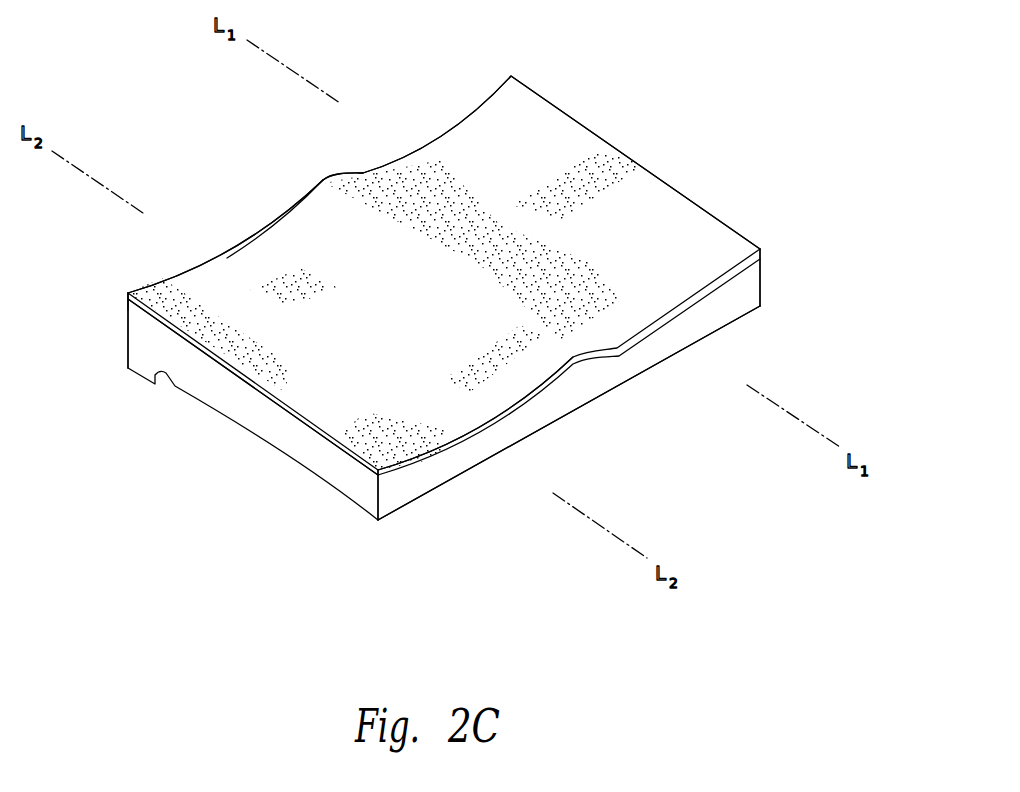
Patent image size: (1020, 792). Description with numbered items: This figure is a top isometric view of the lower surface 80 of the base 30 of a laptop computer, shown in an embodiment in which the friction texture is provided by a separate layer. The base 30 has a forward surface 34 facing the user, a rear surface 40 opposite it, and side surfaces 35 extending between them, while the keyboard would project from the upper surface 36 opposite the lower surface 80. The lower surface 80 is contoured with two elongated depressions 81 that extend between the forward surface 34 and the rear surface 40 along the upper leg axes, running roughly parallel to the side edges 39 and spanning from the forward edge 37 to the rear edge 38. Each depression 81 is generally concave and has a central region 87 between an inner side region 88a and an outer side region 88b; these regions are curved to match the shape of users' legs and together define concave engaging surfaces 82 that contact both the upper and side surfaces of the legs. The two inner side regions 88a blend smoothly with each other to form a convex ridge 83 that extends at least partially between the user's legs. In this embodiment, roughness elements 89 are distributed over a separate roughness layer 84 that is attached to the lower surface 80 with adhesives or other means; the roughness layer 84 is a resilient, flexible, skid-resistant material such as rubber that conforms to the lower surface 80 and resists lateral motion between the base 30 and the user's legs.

The base 30 is at (397, 78).
The forward surface 34 is at (402, 493).
The side surfaces 35 is at (278, 423).
The upper surface 36 is at (713, 333).
The forward edge 37 is at (525, 405).
The rear edge 38 is at (363, 173).
The side edges 39 is at (252, 380).
The rear surface 40 is at (128, 322).
The lower surface 80 is at (735, 283).
The depressions 81 is at (447, 120).
The engaging surfaces 82 is at (377, 410).
The ridge 83 is at (323, 180).
The roughness layer 84 is at (128, 294).
The central region 87 is at (463, 190).
The inner side regions 88a is at (367, 218).
The outer side regions 88b is at (722, 250).
The roughness elements 89 is at (230, 320).